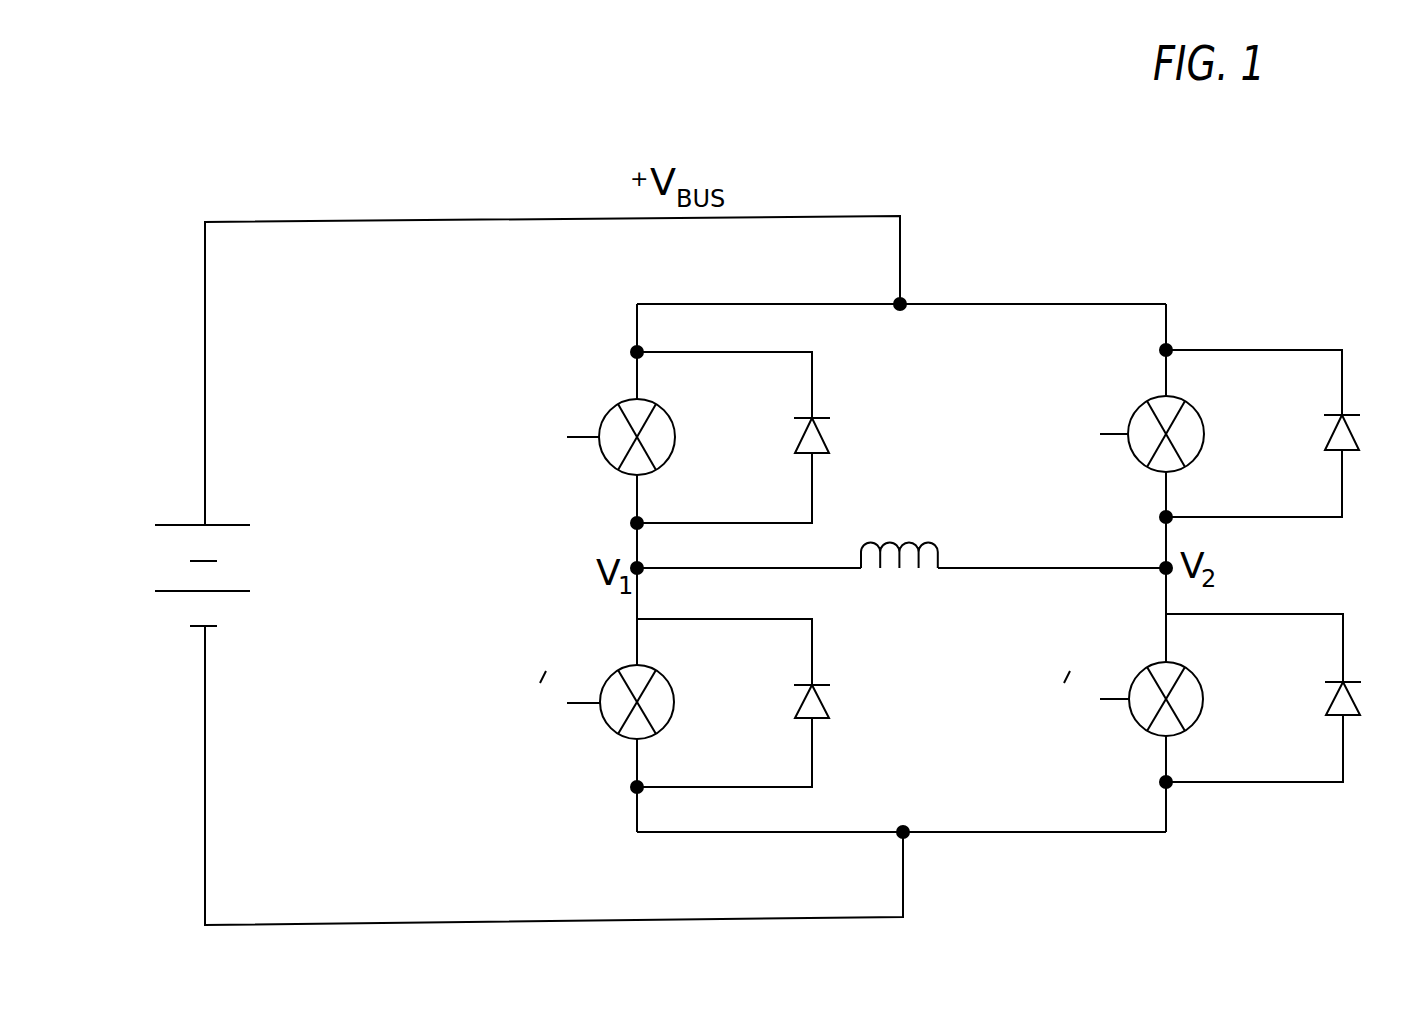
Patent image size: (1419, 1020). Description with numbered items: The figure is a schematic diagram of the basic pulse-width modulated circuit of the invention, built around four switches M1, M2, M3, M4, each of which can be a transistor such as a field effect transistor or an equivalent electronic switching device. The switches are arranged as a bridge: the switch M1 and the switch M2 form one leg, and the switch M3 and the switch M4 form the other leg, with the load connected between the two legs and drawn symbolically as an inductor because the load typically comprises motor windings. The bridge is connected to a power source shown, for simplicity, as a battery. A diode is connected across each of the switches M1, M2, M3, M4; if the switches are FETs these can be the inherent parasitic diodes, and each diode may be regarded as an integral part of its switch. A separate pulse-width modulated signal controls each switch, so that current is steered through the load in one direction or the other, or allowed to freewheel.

The switch M1 is at (641, 437).
The switch M2 is at (641, 706).
The switch M3 is at (1167, 433).
The switch M4 is at (1168, 701).